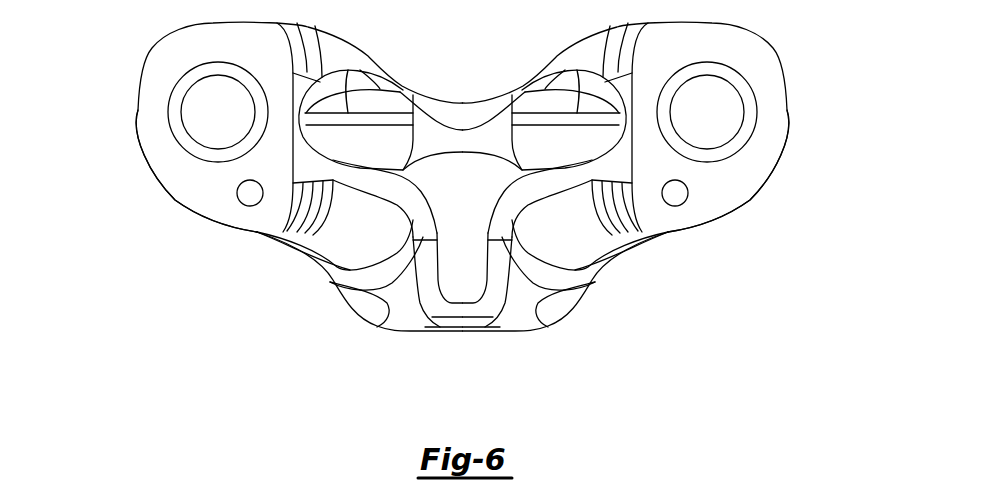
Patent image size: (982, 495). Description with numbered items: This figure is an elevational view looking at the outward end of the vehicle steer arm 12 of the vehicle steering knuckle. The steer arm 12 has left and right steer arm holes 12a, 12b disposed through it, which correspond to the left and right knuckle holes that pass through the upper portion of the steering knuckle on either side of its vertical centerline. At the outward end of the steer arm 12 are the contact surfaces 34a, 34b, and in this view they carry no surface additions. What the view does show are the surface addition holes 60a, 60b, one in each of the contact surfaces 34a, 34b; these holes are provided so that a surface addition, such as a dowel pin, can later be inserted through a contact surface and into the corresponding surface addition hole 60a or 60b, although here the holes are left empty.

The vehicle steer arm 12 is at (455, 115).
The left steer arm hole 12a is at (703, 114).
The right steer arm hole 12b is at (219, 112).
The contact surface 34a is at (757, 158).
The contact surface 34b is at (168, 158).
The surface addition hole 60a is at (675, 195).
The surface addition hole 60b is at (250, 195).